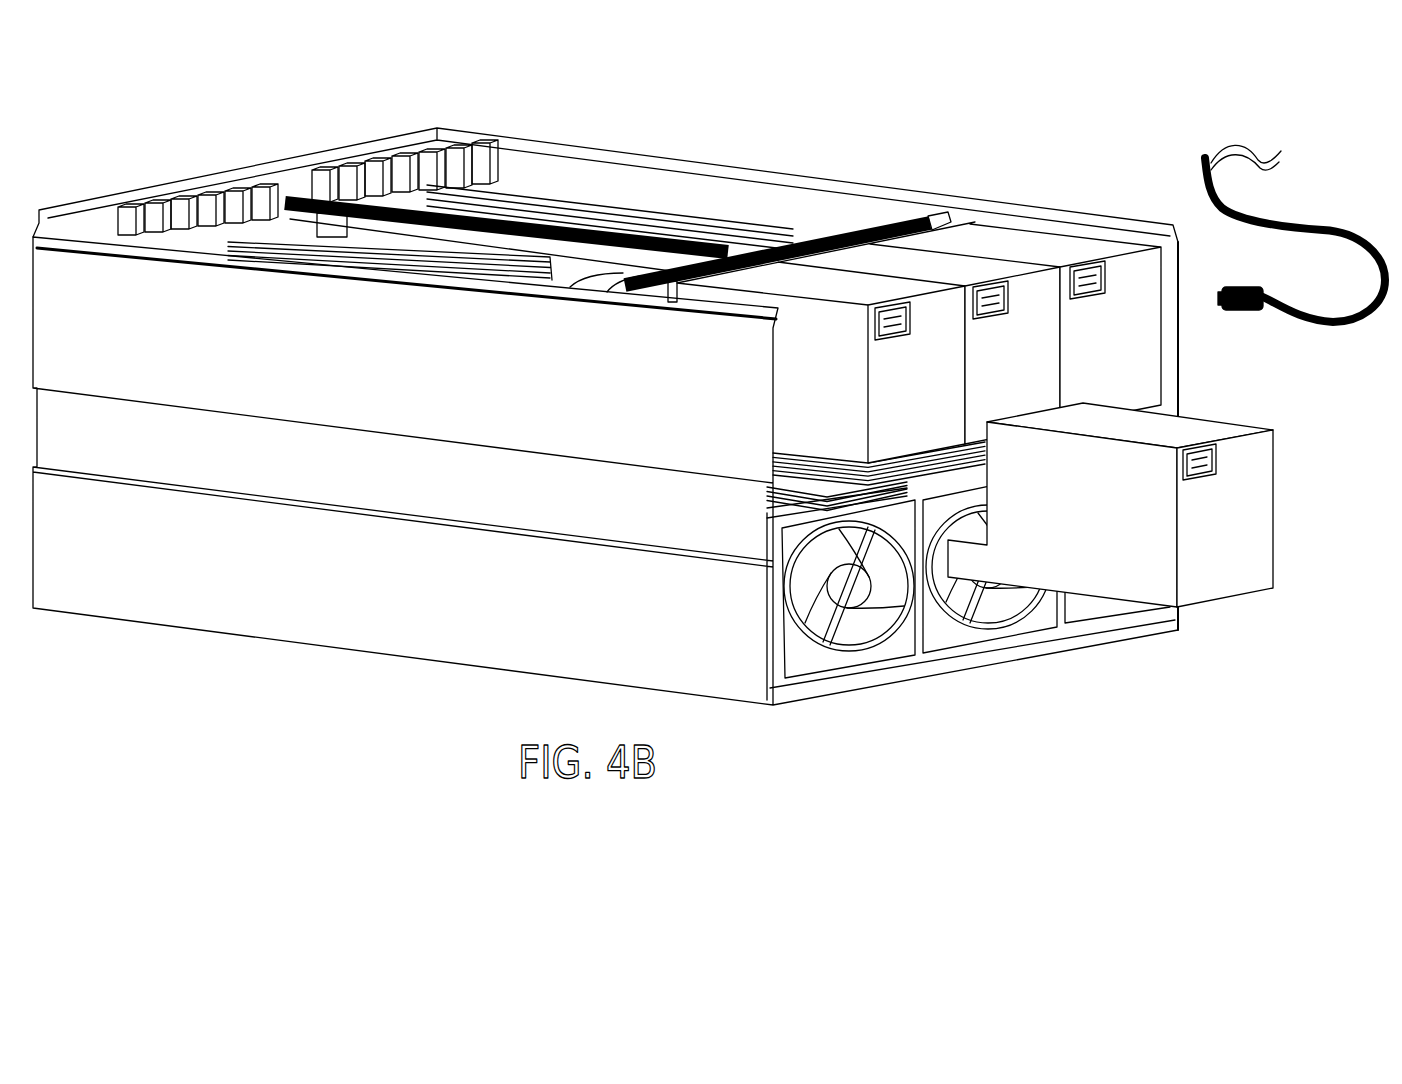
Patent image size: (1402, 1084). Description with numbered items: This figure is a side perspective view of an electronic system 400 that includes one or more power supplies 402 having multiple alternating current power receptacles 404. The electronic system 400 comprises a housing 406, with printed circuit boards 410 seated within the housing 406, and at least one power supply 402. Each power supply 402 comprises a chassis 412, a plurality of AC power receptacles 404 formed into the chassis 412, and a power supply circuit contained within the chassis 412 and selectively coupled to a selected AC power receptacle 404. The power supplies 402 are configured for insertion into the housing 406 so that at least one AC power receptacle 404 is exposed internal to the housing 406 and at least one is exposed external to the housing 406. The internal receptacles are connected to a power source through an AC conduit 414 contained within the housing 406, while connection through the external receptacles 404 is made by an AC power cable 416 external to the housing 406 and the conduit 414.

The electronic system 400 is at (1050, 124).
The power supply 402 is at (1218, 427).
The alternating current (AC) power receptacle 404 is at (1123, 278).
The housing 406 is at (1098, 213).
The printed circuit boards 410 is at (703, 220).
The chassis 412 is at (1073, 242).
The alternating current (AC) conduit 414 is at (950, 217).
The alternating current (AC) power cable 416 is at (1290, 227).